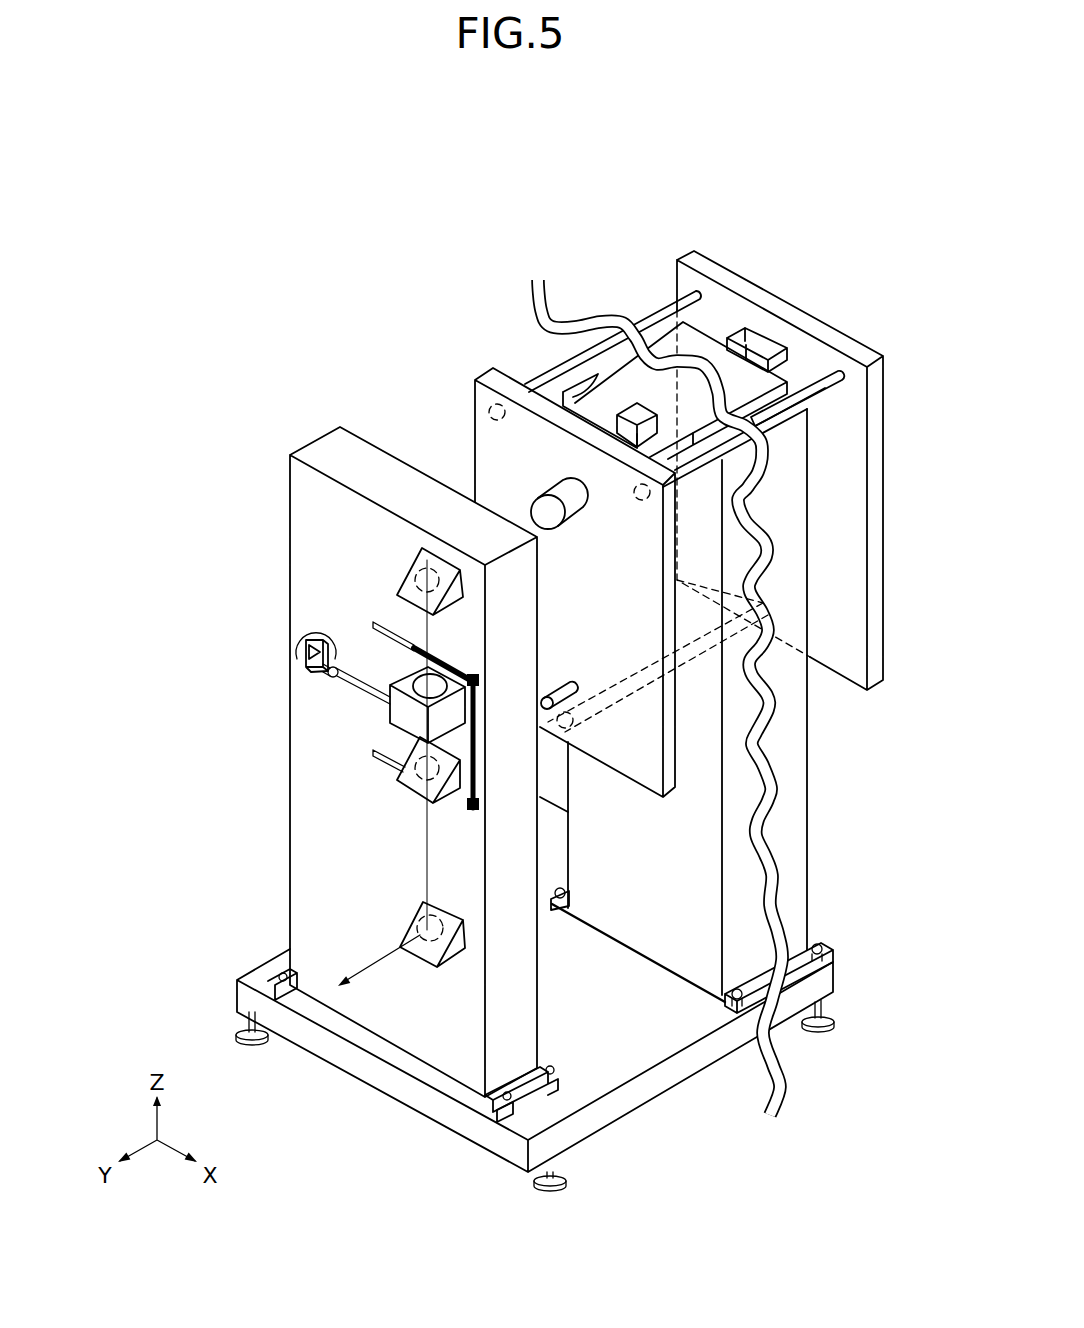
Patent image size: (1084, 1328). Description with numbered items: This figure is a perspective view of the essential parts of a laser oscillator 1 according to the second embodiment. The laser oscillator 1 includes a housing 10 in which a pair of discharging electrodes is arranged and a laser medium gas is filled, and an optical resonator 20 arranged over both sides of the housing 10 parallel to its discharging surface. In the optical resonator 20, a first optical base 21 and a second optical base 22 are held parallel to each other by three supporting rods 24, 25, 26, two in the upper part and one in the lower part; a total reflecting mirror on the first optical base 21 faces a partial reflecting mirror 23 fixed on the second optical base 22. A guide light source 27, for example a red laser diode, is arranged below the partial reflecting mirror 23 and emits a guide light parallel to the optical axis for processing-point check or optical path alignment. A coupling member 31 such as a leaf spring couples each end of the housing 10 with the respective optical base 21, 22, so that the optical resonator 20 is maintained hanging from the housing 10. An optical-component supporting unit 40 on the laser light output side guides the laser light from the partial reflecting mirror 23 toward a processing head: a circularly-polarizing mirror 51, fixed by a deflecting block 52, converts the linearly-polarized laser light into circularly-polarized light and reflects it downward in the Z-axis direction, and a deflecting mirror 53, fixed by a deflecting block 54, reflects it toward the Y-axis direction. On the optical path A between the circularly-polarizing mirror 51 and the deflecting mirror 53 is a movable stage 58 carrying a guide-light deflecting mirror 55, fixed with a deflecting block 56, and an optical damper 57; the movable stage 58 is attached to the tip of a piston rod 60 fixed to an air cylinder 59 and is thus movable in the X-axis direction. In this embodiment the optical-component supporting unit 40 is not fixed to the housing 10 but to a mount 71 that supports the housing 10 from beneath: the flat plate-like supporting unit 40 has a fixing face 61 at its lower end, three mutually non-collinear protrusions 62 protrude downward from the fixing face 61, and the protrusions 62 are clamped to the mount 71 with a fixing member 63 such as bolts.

The laser oscillator 1 is at (712, 148).
The housing 10 is at (810, 922).
The optical resonator 20 is at (714, 251).
The first optical base 21 is at (843, 327).
The second optical base 22 is at (547, 512).
The partial reflecting mirror 23 is at (475, 418).
The supporting rod 24 is at (660, 303).
The supporting rod 25 is at (812, 402).
The supporting rod 26 is at (693, 657).
The guide light source 27 is at (575, 697).
The coupling member 31 is at (754, 328).
The optical-component supporting unit 40 is at (306, 440).
The circularly-polarizing mirror 51 is at (417, 573).
The deflecting block 52 is at (405, 588).
The deflecting mirror 53 is at (412, 947).
The deflecting block 54 is at (403, 937).
The guide-light deflecting mirror 55 is at (415, 778).
The deflecting block 56 is at (397, 782).
The optical damper 57 is at (407, 710).
The movable stage 58 is at (452, 798).
The air cylinder 59 is at (306, 652).
The piston rod 60 is at (336, 680).
The fixing face 61 is at (495, 1106).
The protrusions 62 is at (510, 1116).
The fixing member 63 is at (540, 1086).
The mount 71 is at (633, 1108).
The optical path A is at (430, 868).